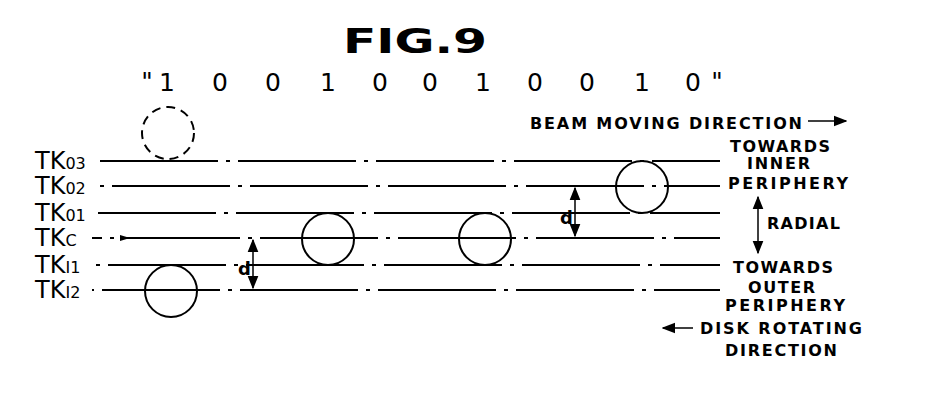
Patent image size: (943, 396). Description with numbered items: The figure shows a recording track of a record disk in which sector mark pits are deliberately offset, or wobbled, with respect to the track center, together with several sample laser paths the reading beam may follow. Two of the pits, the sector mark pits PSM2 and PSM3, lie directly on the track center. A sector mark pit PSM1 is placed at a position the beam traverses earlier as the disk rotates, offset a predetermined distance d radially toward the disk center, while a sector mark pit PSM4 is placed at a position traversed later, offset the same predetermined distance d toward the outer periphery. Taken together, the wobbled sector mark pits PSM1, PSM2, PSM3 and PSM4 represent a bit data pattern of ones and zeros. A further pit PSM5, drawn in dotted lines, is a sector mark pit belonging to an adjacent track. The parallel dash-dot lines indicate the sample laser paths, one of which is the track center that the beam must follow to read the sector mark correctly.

The sector mark pit PSM1 is at (189, 309).
The sector mark pit PSM2 is at (328, 265).
The sector mark pit PSM3 is at (485, 265).
The sector mark pit PSM4 is at (632, 211).
The sector mark pit of an adjacent track PSM5 is at (195, 135).